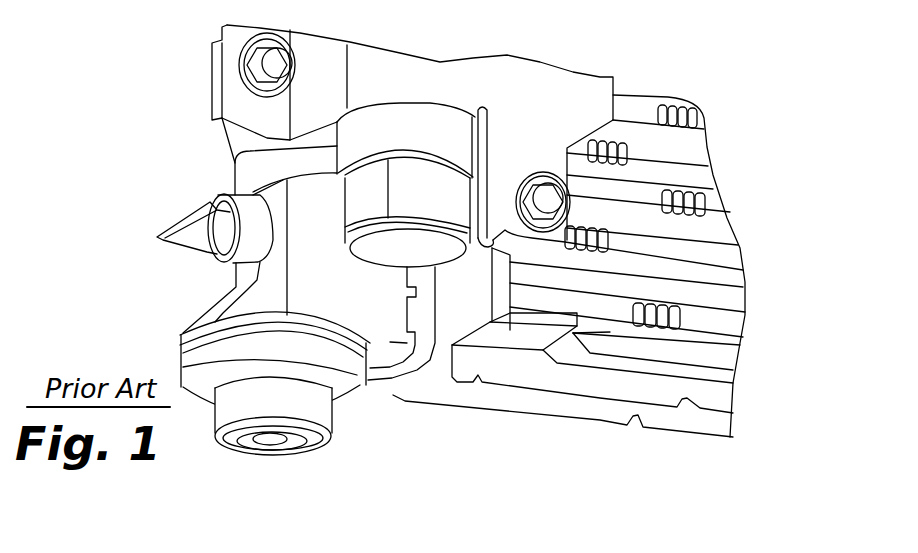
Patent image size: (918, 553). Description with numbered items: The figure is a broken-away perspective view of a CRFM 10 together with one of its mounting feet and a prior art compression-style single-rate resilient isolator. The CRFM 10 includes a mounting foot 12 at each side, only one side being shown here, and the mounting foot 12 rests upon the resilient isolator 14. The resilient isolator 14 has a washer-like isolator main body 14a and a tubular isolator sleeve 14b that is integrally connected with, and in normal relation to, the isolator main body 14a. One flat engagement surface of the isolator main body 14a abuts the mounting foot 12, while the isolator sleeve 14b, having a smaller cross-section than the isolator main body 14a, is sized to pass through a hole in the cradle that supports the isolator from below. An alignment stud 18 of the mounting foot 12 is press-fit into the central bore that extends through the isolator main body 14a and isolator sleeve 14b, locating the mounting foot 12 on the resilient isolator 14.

The CRFM 10 is at (725, 70).
The mounting foot 12 is at (180, 335).
The resilient isolator 14 is at (197, 457).
The isolator main body 14a is at (347, 366).
The isolator sleeve 14b is at (325, 412).
The alignment stud 18 is at (273, 437).